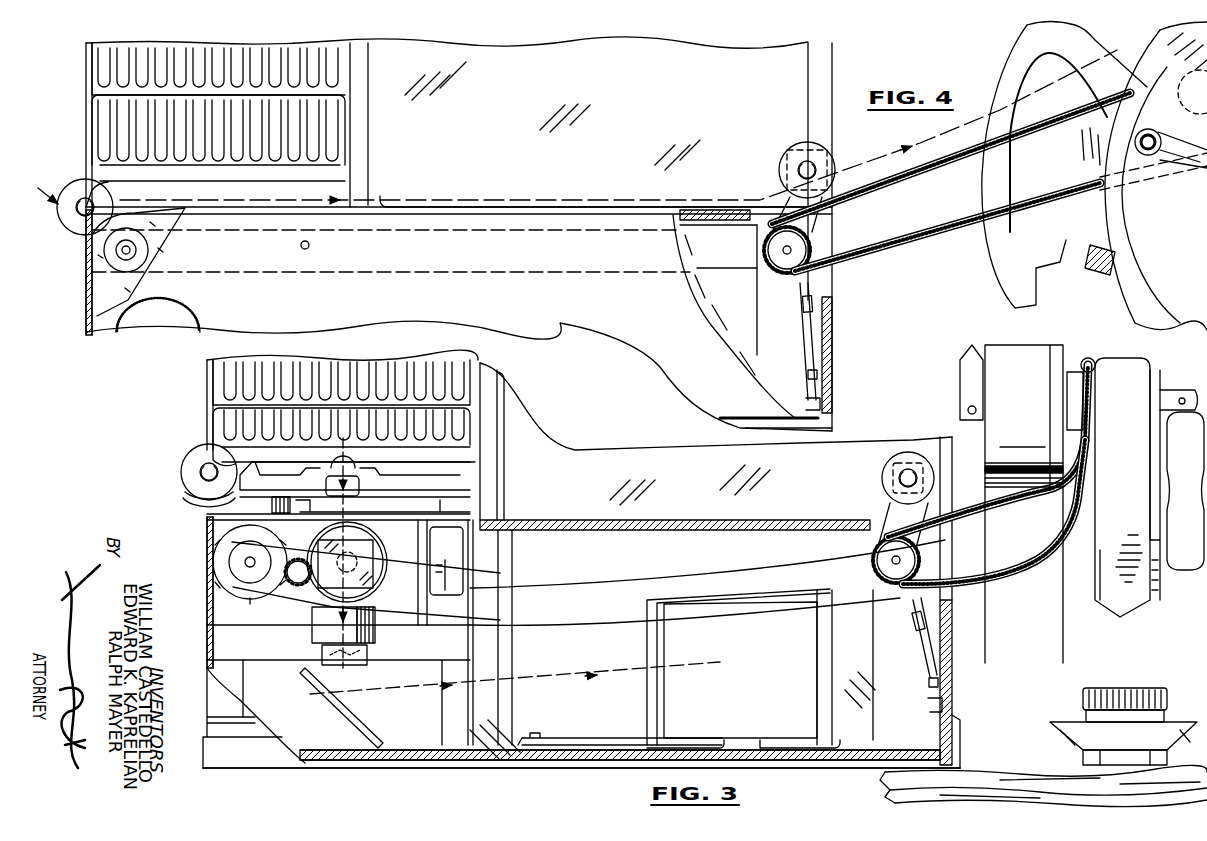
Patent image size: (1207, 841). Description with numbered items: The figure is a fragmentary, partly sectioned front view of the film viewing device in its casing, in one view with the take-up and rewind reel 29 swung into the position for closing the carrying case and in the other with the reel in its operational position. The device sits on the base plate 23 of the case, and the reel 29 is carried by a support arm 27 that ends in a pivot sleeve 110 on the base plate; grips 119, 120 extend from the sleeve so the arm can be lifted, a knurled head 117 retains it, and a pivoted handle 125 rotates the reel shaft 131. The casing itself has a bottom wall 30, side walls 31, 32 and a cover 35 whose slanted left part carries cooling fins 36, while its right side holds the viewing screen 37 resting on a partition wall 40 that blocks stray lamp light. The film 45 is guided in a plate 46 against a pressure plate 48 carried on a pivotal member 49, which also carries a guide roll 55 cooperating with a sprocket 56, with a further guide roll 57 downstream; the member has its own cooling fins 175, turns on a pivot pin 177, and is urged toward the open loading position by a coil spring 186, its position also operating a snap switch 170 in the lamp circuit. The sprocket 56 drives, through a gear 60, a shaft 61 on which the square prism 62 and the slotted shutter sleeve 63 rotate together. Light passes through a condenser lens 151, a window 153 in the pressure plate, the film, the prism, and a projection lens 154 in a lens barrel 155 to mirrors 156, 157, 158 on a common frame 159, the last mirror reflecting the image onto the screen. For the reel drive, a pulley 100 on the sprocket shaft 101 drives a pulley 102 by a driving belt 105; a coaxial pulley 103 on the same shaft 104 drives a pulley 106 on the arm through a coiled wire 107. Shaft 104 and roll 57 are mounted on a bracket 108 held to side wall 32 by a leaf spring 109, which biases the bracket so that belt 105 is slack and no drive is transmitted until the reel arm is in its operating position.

In FIG. 3, the base plate 23 is at (892, 780).
In FIG. 4, the support arm 27 is at (1127, 295).
In FIG. 3, the support arm 27 is at (1140, 664).
In FIG. 4, the take-up and rewind reel 29 is at (1005, 268).
In FIG. 3, the take-up and rewind reel 29 is at (1062, 618).
In FIG. 4, the bottom wall 30 is at (832, 422).
In FIG. 3, the bottom wall 30 is at (539, 761).
In FIG. 4, the side wall 31 is at (88, 298).
In FIG. 3, the side wall 31 is at (210, 615).
In FIG. 4, the side wall 32 is at (835, 348).
In FIG. 3, the side wall 32 is at (946, 681).
In FIG. 4, the cover 35 is at (350, 50).
In FIG. 3, the cover 35 is at (482, 367).
In FIG. 4, the cooling fins 36 is at (268, 52).
In FIG. 3, the cooling fins 36 is at (230, 375).
In FIG. 4, the viewing screen 37 is at (590, 55).
In FIG. 3, the viewing screen 37 is at (545, 448).
In FIG. 3, the partition wall 40 is at (490, 567).
In FIG. 4, the film 45 is at (500, 198).
In FIG. 3, the plate 46 is at (225, 518).
In FIG. 3, the pressure plate 48 is at (442, 478).
In FIG. 4, the pivotal member 49 is at (324, 137).
In FIG. 3, the pivotal member 49 is at (230, 421).
In FIG. 4, the guide roll 55 is at (72, 190).
In FIG. 3, the guide roll 55 is at (188, 470).
In FIG. 4, the sprocket 56 is at (92, 258).
In FIG. 3, the sprocket 56 is at (222, 565).
In FIG. 4, the guide roll 57 is at (790, 158).
In FIG. 3, the guide roll 57 is at (882, 478).
In FIG. 3, the gear 60 is at (305, 590).
In FIG. 3, the shaft 61 is at (352, 551).
In FIG. 3, the polygonal prism 62 is at (360, 584).
In FIG. 3, the sleeve 63 is at (318, 549).
In FIG. 4, the pulley 100 is at (140, 265).
In FIG. 3, the pulley 100 is at (246, 583).
In FIG. 4, the shaft 101 is at (135, 249).
In FIG. 4, the pulley 102 is at (832, 226).
In FIG. 3, the pulley 102 is at (918, 553).
In FIG. 4, the pulley 103 is at (825, 254).
In FIG. 3, the pulley 103 is at (916, 579).
In FIG. 4, the shaft 104 is at (770, 249).
In FIG. 4, the driving belt 105 is at (560, 272).
In FIG. 3, the driving belt 105 is at (590, 583).
In FIG. 4, the pulley 106 is at (1150, 129).
In FIG. 3, the pulley 106 is at (1072, 368).
In FIG. 4, the coiled wire 107 is at (938, 238).
In FIG. 3, the coiled wire 107 is at (1024, 562).
In FIG. 4, the bracket 108 is at (797, 320).
In FIG. 3, the bracket 108 is at (913, 630).
In FIG. 4, the leaf spring 109 is at (812, 368).
In FIG. 3, the leaf spring 109 is at (932, 680).
In FIG. 3, the pivot sleeve 110 is at (1105, 748).
In FIG. 3, the knurled head 117 is at (1163, 695).
In FIG. 3, the grip 119 is at (1070, 725).
In FIG. 3, the grip 120 is at (1185, 727).
In FIG. 4, the handle 125 is at (1195, 178).
In FIG. 3, the handle 125 is at (1192, 565).
In FIG. 3, the reel shaft 131 is at (1057, 397).
In FIG. 3, the condenser lens 151 is at (352, 465).
In FIG. 3, the window 153 is at (360, 488).
In FIG. 3, the projection lens 154 is at (375, 640).
In FIG. 3, the lens barrel 155 is at (318, 633).
In FIG. 3, the mirror 156 is at (376, 712).
In FIG. 3, the mirror 157 is at (650, 626).
In FIG. 3, the mirror 158 is at (572, 738).
In FIG. 3, the frame 159 is at (688, 690).
In FIG. 3, the snap switch 170 is at (462, 594).
In FIG. 4, the cooling fins 175 is at (100, 116).
In FIG. 3, the cooling fins 175 is at (458, 420).
In FIG. 3, the pivot pin 177 is at (455, 509).
In FIG. 3, the coil spring 186 is at (283, 512).